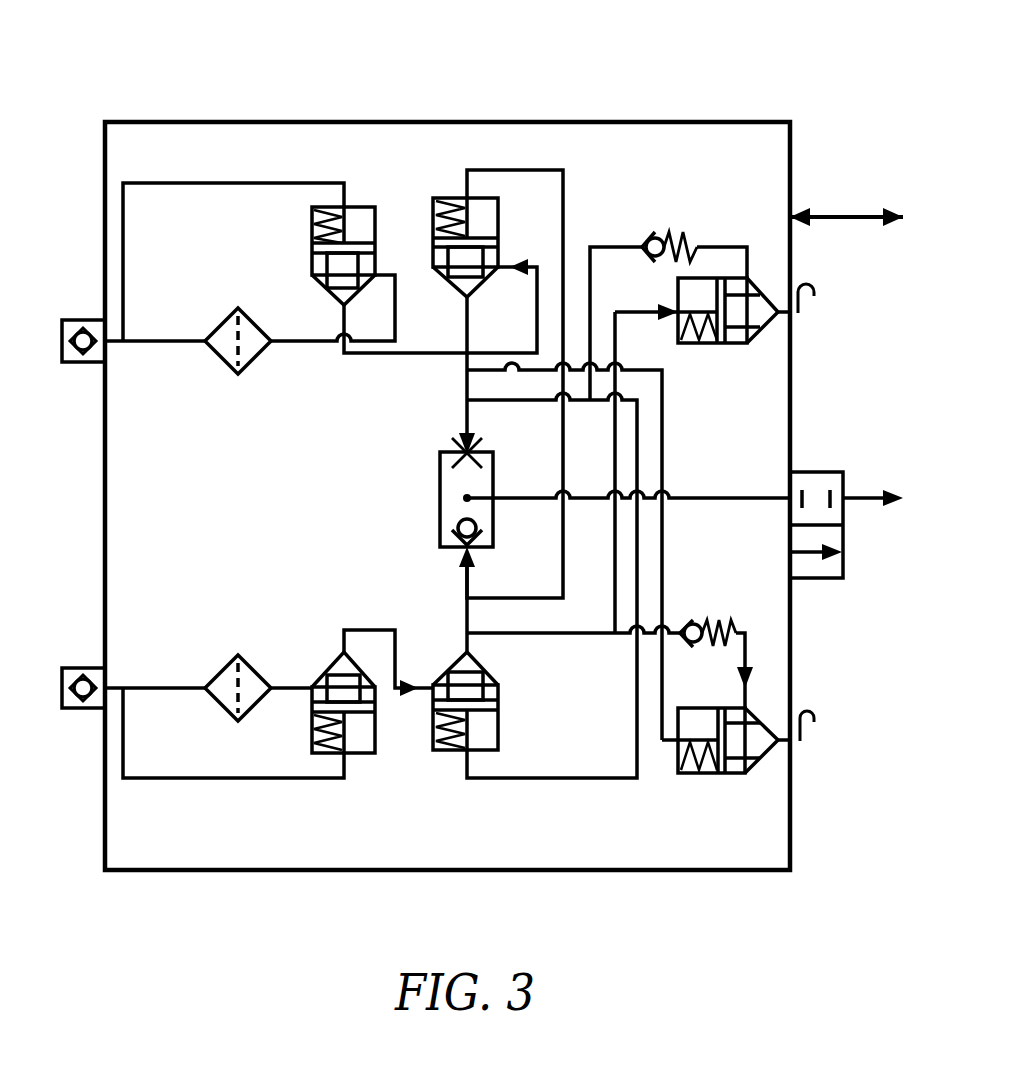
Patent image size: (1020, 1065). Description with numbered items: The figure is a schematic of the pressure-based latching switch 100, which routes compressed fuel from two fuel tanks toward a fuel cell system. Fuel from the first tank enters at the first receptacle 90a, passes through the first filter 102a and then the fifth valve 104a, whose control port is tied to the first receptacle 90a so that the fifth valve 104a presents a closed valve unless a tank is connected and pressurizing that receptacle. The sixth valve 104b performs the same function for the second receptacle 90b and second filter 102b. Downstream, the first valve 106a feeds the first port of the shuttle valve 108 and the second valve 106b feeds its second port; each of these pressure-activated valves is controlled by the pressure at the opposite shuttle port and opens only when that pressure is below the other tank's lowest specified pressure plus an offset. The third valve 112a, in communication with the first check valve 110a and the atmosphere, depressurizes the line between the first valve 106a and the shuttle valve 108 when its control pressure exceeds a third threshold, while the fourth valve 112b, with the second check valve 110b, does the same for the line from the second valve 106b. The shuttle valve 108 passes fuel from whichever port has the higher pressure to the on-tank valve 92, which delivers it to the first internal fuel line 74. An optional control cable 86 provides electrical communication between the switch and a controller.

The pressure-based latching switch 100 is at (243, 122).
The first receptacle 90a is at (85, 320).
The second receptacle 90b is at (85, 668).
The first filter 102a is at (222, 357).
The second filter 102b is at (220, 670).
The fifth valve 104a is at (312, 250).
The sixth valve 104b is at (330, 668).
The first valve 106a is at (447, 198).
The second valve 106b is at (495, 672).
The shuttle valve 108 is at (440, 470).
The first check valve 110a is at (682, 237).
The second check valve 110b is at (713, 623).
The third valve 112a is at (708, 343).
The fourth valve 112b is at (735, 773).
The control cable 86 is at (845, 216).
The first internal fuel line 74 is at (868, 497).
The on-tank valve 92 is at (814, 578).